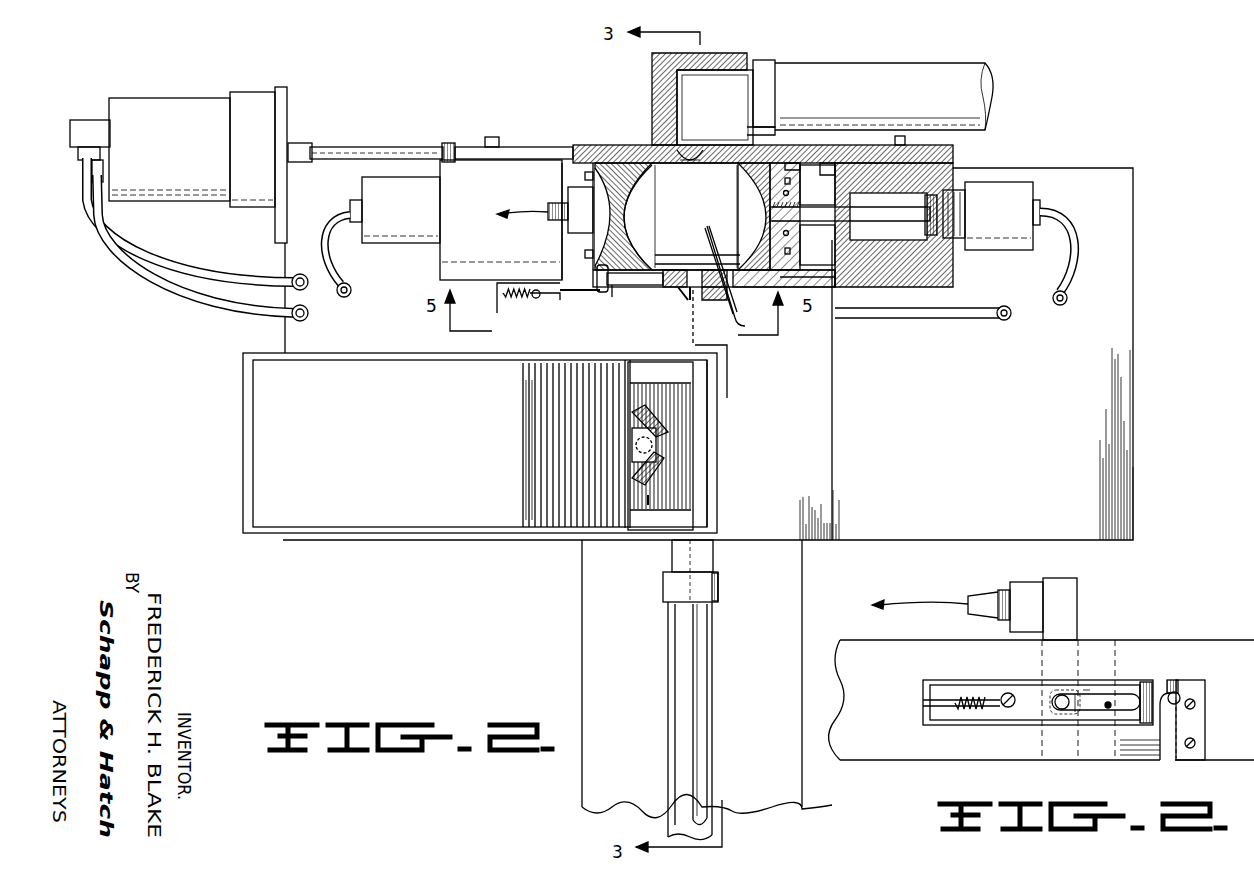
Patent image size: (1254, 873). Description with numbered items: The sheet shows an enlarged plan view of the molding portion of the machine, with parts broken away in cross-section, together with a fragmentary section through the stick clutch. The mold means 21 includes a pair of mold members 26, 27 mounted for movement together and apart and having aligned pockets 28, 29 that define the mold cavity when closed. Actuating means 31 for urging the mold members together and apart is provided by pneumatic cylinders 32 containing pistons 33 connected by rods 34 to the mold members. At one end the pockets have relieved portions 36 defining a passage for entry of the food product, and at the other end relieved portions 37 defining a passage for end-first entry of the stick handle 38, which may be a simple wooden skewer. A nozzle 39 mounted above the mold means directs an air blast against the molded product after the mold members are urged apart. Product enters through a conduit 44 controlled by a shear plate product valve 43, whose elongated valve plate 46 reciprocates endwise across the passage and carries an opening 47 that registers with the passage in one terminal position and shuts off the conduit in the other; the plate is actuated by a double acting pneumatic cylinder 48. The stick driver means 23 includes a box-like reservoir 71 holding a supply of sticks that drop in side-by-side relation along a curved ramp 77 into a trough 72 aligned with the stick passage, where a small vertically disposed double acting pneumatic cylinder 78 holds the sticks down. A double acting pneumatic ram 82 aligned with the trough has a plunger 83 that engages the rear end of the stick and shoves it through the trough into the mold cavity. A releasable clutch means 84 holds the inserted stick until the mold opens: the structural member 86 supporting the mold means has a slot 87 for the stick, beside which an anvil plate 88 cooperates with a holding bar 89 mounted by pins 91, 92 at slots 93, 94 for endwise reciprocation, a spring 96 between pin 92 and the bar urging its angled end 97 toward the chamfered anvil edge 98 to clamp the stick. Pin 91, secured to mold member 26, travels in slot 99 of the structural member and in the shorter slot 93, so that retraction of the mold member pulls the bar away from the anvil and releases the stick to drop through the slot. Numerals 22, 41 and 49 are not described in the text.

In FIG. 2, the mold means 21 is at (578, 247).
In FIG. 2, the collar 22 is at (733, 128).
In FIG. 2, the stick driver means 23 is at (708, 455).
In FIG. 2, the mold member 26 is at (638, 148).
In FIG. 2, the mold member 27 is at (780, 137).
In FIG. 2, the pocket 28 is at (637, 206).
In FIG. 2, the pocket 29 is at (750, 205).
In FIG. 2, the actuating means 31 is at (426, 150).
In FIG. 2, the pneumatic cylinder 32 is at (878, 240).
In FIG. 2, the piston 33 is at (950, 232).
In FIG. 2, the rod 34 is at (914, 221).
In FIG. 2, the relieved portion 36 is at (660, 167).
In FIG. 2, the relieved portion 37 is at (730, 255).
In FIG. 2, the stick handle 38 is at (540, 433).
In FIG. 2, the nozzle 39 is at (708, 228).
In FIG. 2, the bearing block 41 is at (789, 193).
In FIG. 2, the product valve 43 is at (696, 140).
In FIG. 2, the conduit 44 is at (943, 80).
In FIG. 2, the valve plate 46 is at (817, 160).
In FIG. 2, the opening 47 is at (598, 147).
In FIG. 2, the double acting pneumatic cylinder 48 is at (197, 108).
In FIG. 2, the housing 49 is at (676, 148).
In FIG. 2, the box-like reservoir 71 is at (243, 440).
In FIG. 2, the trough 72 is at (690, 488).
In FIG. 2, the curved ramp 77 is at (649, 505).
In FIG. 2, the double acting pneumatic cylinder 78 is at (664, 440).
In FIG. 2, the double acting pneumatic ram 82 is at (700, 638).
In FIG. 2, the plunger 83 is at (697, 559).
In FIG. 2, the releasable clutch means 84 is at (627, 313).
In FIG. 5, the releasable clutch means 84 is at (1168, 642).
In FIG. 2, the structural member 86 is at (812, 285).
In FIG. 5, the structural member 86 is at (1200, 648).
In FIG. 2, the slot 87 is at (700, 290).
In FIG. 5, the slot 87 is at (1168, 735).
In FIG. 2, the anvil plate 88 is at (720, 302).
In FIG. 5, the anvil plate 88 is at (1205, 718).
In FIG. 2, the holding bar 89 is at (497, 289).
In FIG. 5, the holding bar 89 is at (1018, 723).
In FIG. 2, the pin 91 is at (595, 300).
In FIG. 5, the pin 91 is at (1066, 694).
In FIG. 2, the pin 92 is at (534, 300).
In FIG. 5, the pin 92 is at (1002, 694).
In FIG. 2, the slot 93 is at (614, 290).
In FIG. 5, the slot 93 is at (1108, 700).
In FIG. 5, the slot 94 is at (998, 712).
In FIG. 2, the spring 96 is at (503, 312).
In FIG. 5, the spring 96 is at (980, 695).
In FIG. 2, the bar end 97 is at (682, 298).
In FIG. 5, the bar end 97 is at (1152, 695).
In FIG. 5, the anvil edge 98 is at (1180, 698).
In FIG. 2, the slot 99 is at (628, 286).
In FIG. 5, the slot 99 is at (1100, 712).